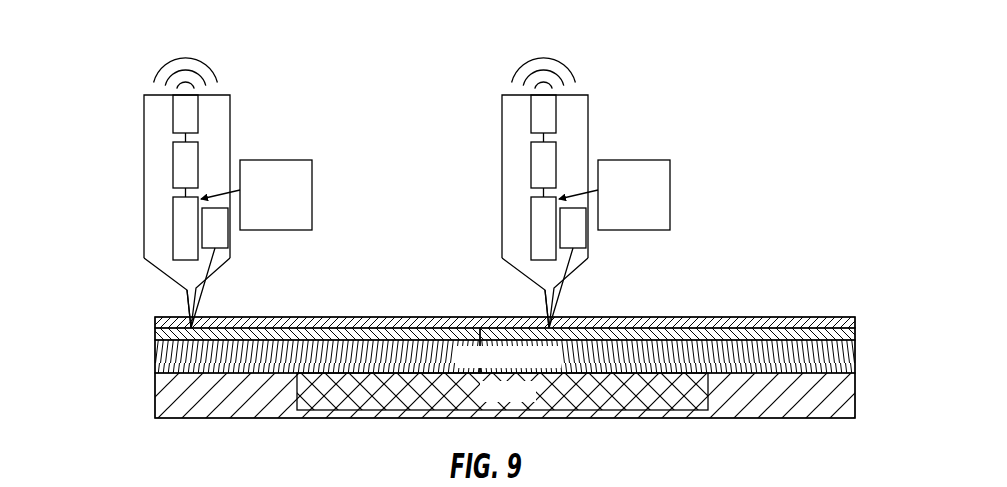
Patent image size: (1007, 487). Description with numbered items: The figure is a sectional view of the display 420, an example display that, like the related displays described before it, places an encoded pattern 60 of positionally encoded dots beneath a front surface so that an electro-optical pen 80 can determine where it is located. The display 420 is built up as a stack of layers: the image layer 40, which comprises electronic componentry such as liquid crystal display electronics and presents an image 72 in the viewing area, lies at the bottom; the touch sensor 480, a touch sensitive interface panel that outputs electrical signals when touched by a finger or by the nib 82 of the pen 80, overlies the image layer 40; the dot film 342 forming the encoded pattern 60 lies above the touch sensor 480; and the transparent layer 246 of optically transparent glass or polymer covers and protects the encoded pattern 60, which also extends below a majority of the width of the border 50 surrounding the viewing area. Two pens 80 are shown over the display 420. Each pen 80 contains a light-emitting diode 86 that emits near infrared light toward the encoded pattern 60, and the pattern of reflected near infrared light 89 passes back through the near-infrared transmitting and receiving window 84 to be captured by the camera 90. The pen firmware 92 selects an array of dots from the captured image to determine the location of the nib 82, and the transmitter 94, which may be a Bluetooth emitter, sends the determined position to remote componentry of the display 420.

The display 420 is at (103, 92).
The electro-optical pen 80 is at (234, 131).
The transmitter 94 is at (173, 122).
The pen firmware 92 is at (173, 175).
The camera 90 is at (173, 231).
The light-emitting diode 86 is at (228, 236).
The near-infrared transmitting and receiving window 84 is at (215, 270).
The nib 82 is at (187, 290).
The reflected near infrared light 89 is at (312, 200).
The border 50 is at (818, 318).
The transparent layer 246 is at (432, 317).
The touch sensor 480 is at (346, 330).
The encoded pattern 60 is at (693, 329).
The dot film 342 is at (745, 330).
The image layer 40 is at (155, 403).
The image 72 is at (708, 378).